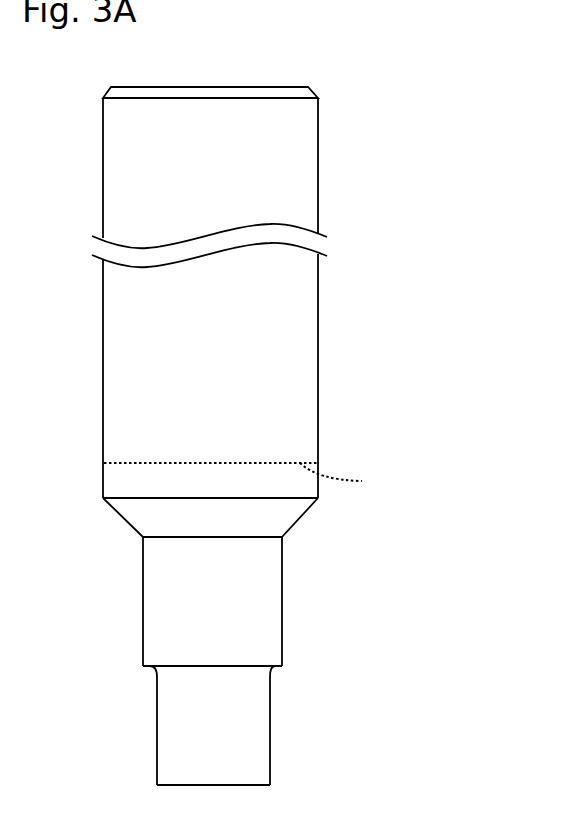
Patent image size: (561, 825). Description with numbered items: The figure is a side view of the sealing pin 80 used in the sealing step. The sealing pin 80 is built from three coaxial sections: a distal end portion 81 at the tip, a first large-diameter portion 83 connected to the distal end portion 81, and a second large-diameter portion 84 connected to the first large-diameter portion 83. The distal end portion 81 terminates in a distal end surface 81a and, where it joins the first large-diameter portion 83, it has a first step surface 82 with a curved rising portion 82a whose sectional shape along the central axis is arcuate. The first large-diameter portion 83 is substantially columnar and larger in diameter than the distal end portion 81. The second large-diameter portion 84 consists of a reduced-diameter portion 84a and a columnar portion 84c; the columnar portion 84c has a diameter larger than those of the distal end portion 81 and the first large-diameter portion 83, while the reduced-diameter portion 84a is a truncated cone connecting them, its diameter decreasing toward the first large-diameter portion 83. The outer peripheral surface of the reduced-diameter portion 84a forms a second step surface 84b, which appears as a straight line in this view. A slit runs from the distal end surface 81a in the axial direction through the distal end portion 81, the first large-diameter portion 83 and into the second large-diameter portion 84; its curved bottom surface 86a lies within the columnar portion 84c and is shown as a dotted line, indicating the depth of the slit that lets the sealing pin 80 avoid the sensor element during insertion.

The sealing pin 80 is at (436, 111).
The second large-diameter portion 84 is at (389, 266).
The columnar portion 84c is at (288, 319).
The bottom surface 86a is at (258, 477).
The reduced-diameter portion 84a is at (290, 512).
The second step surface 84b is at (293, 517).
The first large-diameter portion 83 is at (257, 609).
The first step surface 82 is at (354, 698).
The rising portion 82a is at (272, 670).
The distal end portion 81 is at (258, 731).
The distal end surface 81a is at (248, 786).